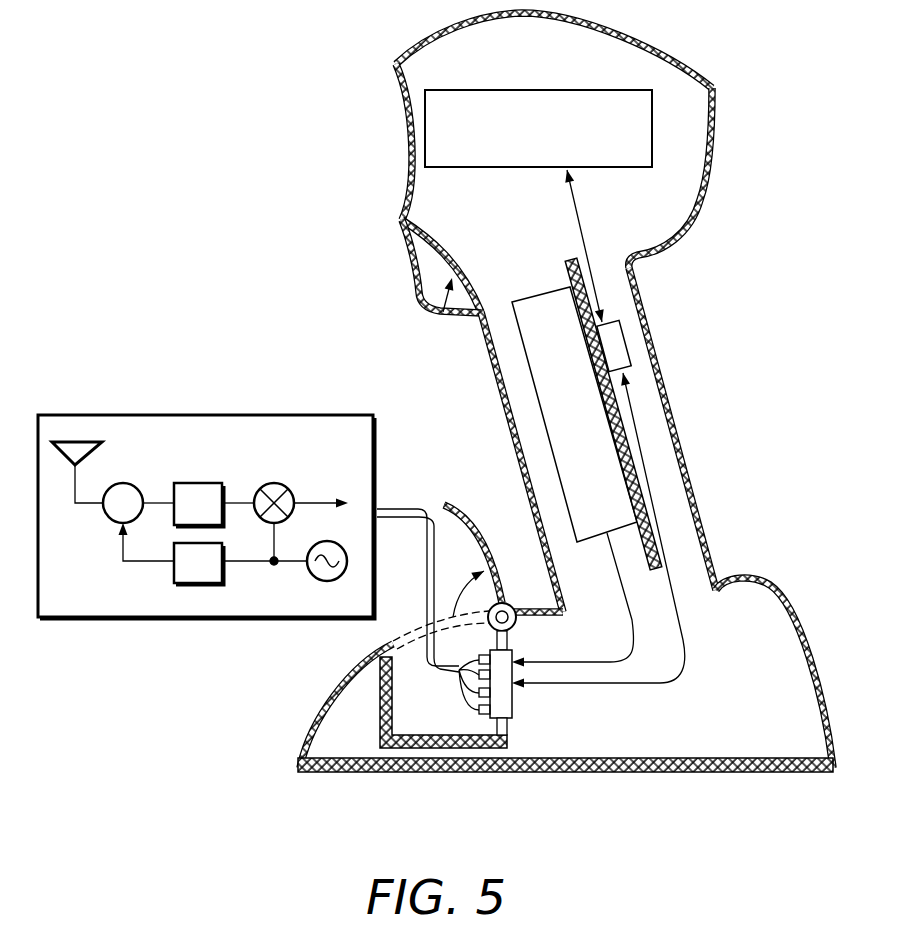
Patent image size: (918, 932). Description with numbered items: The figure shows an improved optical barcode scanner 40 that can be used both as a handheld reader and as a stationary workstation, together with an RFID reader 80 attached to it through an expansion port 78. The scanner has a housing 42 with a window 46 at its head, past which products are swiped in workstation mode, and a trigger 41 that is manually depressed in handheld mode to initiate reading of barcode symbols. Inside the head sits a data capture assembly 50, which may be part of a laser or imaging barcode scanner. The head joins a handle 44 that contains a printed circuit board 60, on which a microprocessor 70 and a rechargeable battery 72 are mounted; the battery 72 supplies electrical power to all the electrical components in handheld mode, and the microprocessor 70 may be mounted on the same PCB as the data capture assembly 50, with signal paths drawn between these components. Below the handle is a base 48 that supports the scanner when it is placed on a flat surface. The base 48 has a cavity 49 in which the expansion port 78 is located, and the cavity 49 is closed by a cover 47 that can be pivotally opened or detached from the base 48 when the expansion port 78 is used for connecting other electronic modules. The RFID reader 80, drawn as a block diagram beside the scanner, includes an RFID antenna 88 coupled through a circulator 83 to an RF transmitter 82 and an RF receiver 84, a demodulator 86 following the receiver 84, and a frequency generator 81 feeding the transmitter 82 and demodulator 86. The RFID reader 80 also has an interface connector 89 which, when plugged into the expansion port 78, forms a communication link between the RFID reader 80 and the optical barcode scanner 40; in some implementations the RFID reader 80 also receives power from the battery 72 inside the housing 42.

The optical barcode scanner 40 is at (746, 90).
The trigger 41 is at (413, 293).
The housing 42 is at (716, 148).
The handle 44 is at (640, 300).
The window 46 is at (410, 139).
The cover 47 is at (464, 508).
The base 48 is at (773, 581).
The cavity 49 is at (397, 714).
The data capture assembly 50 is at (540, 90).
The printed circuit board 60 is at (570, 258).
The microprocessor 70 is at (633, 347).
The battery 72 is at (530, 297).
The expansion port 78 is at (515, 705).
The RFID reader 80 is at (207, 415).
The frequency generator 81 is at (316, 580).
The RF transmitter 82 is at (183, 583).
The circulator 83 is at (107, 522).
The RF receiver 84 is at (199, 483).
The demodulator 86 is at (275, 483).
The RFID antenna 88 is at (100, 446).
The interface connector 89 is at (407, 509).